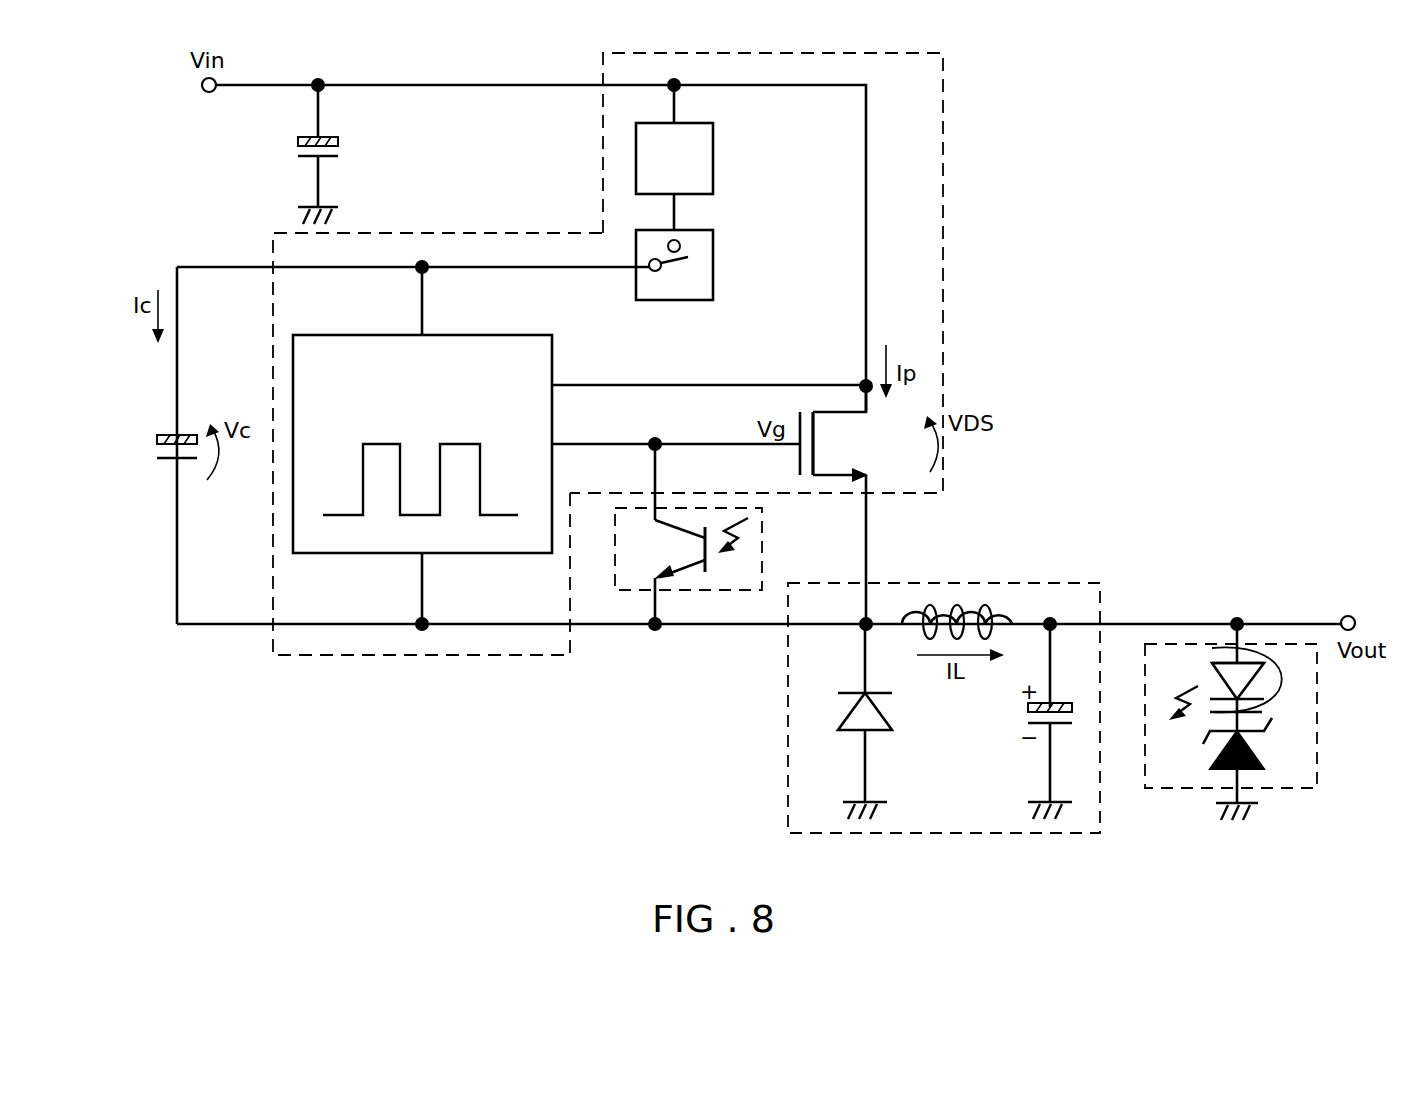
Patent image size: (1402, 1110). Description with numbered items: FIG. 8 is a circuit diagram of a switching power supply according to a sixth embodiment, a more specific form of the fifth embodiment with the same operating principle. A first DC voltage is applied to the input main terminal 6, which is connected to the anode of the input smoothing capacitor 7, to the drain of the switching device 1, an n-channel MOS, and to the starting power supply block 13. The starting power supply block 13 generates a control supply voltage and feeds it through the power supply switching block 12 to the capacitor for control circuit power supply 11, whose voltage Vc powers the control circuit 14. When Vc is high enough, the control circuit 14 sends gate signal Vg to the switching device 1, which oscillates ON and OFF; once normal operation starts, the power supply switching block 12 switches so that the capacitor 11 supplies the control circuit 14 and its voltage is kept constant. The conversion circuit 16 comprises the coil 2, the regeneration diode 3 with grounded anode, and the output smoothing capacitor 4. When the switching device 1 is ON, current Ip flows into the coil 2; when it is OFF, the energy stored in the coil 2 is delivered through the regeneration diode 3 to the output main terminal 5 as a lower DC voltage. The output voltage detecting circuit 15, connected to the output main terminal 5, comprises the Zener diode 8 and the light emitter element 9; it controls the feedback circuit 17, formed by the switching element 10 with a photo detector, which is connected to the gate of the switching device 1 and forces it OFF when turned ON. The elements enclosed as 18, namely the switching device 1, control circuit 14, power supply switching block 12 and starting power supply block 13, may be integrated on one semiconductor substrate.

The switching device 1 is at (820, 449).
The coil 2 is at (1012, 611).
The regeneration diode 3 is at (880, 710).
The output smoothing capacitor 4 is at (1030, 713).
The output main terminal 5 is at (1355, 612).
The input main terminal 6 is at (205, 92).
The input smoothing capacitor 7 is at (338, 151).
The Zener diode 8 is at (1262, 746).
The light emitter element 9 is at (1290, 678).
The switching element with a photo detector 10 is at (700, 539).
The capacitor for control circuit power supply 11 is at (155, 446).
The power supply switching block 12 is at (713, 266).
The starting power supply block 13 is at (713, 157).
The control circuit 14 is at (552, 350).
The output voltage detecting circuit 15 is at (1265, 790).
The conversion circuit 16 is at (1030, 584).
The feedback circuit 17 is at (762, 565).
The integrated elements 18 is at (943, 127).